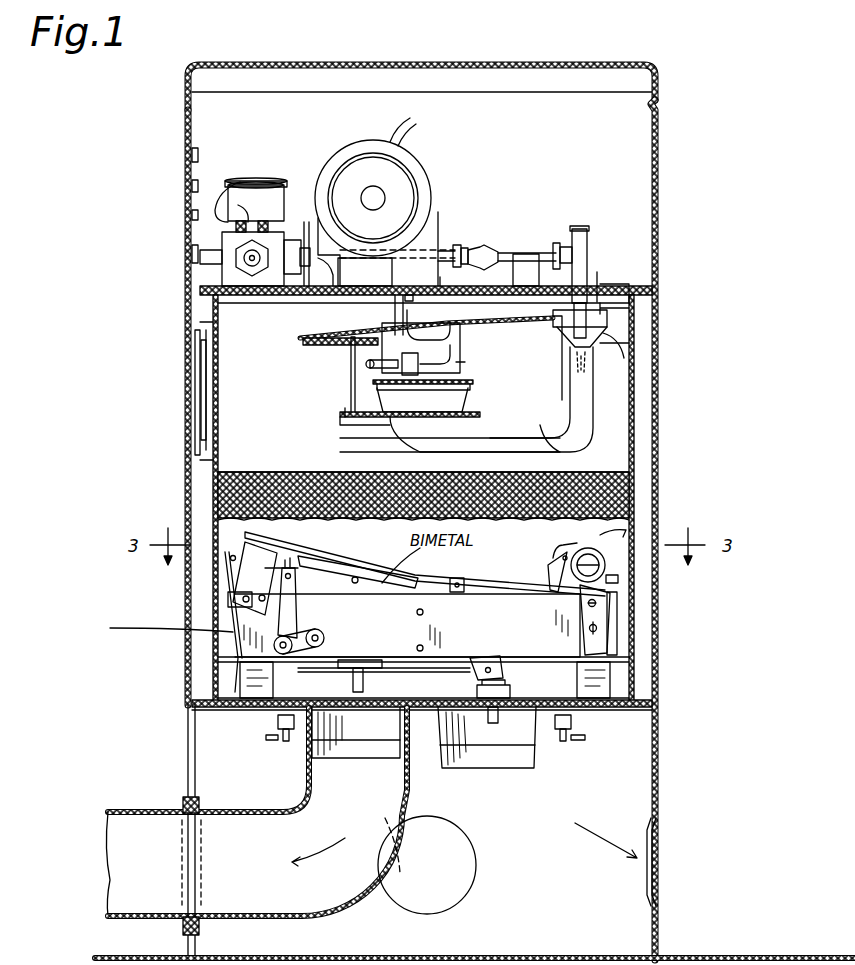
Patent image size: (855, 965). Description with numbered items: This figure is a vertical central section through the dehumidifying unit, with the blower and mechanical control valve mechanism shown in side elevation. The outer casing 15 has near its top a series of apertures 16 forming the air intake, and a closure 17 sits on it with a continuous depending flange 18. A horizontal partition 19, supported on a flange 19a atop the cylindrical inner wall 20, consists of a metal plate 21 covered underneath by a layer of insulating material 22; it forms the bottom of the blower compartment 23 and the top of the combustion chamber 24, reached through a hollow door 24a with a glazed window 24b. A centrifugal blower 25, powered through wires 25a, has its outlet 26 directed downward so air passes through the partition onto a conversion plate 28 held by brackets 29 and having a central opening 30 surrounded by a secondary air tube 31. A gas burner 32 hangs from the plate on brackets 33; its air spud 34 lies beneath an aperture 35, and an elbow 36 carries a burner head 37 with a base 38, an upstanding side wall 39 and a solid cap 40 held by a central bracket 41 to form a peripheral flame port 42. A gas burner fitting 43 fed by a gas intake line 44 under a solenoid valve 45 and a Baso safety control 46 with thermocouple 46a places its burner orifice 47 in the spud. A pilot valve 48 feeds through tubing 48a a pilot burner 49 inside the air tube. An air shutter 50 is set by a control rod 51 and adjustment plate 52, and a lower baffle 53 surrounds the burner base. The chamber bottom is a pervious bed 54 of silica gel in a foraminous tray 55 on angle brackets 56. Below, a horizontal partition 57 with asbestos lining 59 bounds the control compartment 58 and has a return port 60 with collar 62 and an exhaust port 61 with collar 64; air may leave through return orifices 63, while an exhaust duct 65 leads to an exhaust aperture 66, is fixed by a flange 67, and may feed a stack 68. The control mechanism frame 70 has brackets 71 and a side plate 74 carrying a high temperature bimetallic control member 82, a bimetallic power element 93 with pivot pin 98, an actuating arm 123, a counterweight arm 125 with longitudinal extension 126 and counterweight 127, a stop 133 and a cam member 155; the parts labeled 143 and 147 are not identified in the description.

The outer casing 15 is at (659, 377).
The apertures 16 is at (191, 186).
The closure 17 is at (519, 65).
The depending flange 18 is at (659, 96).
The horizontal partition 19 is at (604, 294).
The flange 19a is at (640, 302).
The cylindrical inner wall 20 is at (606, 343).
The metal plate 21 is at (375, 290).
The layer of insulating material 22 is at (278, 298).
The blower compartment 23 is at (640, 160).
The combustion chamber 24 is at (615, 400).
The hollow door 24a is at (195, 366).
The glazed window 24b is at (202, 388).
The centrifugal blower 25 is at (428, 192).
The wires 25a is at (418, 128).
The outlet 26 is at (444, 278).
The conversion plate 28 is at (303, 342).
The brackets 29 is at (400, 312).
The central opening 30 is at (413, 286).
The secondary air tube 31 is at (448, 352).
The gas burner 32 is at (356, 420).
The brackets 33 is at (366, 358).
The air spud 34 is at (620, 356).
The aperture 35 is at (640, 309).
The elbow 36 is at (476, 403).
The burner head 37 is at (350, 410).
The base 38 is at (390, 418).
The side wall 39 is at (450, 402).
The solid cap 40 is at (458, 384).
The central bracket 41 is at (362, 428).
The peripheral flame port 42 is at (470, 388).
The gas burner fitting 43 is at (589, 236).
The gas intake line 44 is at (490, 250).
The solenoid valve 45 is at (282, 190).
The Baso safety control 46 is at (322, 250).
The thermocouple 46a is at (370, 384).
The burner orifice 47 is at (553, 325).
The pilot valve 48 is at (222, 242).
The tubing 48a is at (292, 232).
The pilot burner 49 is at (378, 368).
The air shutter 50 is at (566, 305).
The air shutter control rod 51 is at (592, 286).
The adjustment plate 52 is at (588, 262).
The lower baffle 53 is at (498, 398).
The pervious bed 54 is at (630, 458).
The foraminous tray 55 is at (615, 492).
The angle brackets 56 is at (606, 570).
The horizontal partition 57 is at (659, 716).
The control compartment 58 is at (617, 632).
The asbestos lining 59 is at (659, 702).
The return port 60 is at (512, 712).
The exhaust port 61 is at (390, 712).
The collar 62 is at (531, 768).
The return orifices 63 is at (470, 850).
The collar 64 is at (400, 766).
The exhaust duct 65 is at (240, 812).
The exhaust aperture 66 is at (188, 836).
The flange 67 is at (199, 930).
The stack 68 is at (140, 812).
The frame 70 is at (512, 586).
The brackets 71 is at (262, 686).
The side plate 74 is at (542, 643).
The high temperature bimetallic control member 82 is at (236, 636).
The bimetallic power element 93 is at (352, 568).
The pivot pin 98 is at (458, 578).
The actuating arm 123 is at (567, 585).
The counterweight arm 125 is at (298, 608).
The longitudinal extension 126 is at (292, 642).
The counterweight 127 is at (325, 640).
The stop 133 is at (228, 598).
The cup lid 143 is at (250, 183).
The pipe 147 is at (232, 186).
The cam member 155 is at (606, 582).